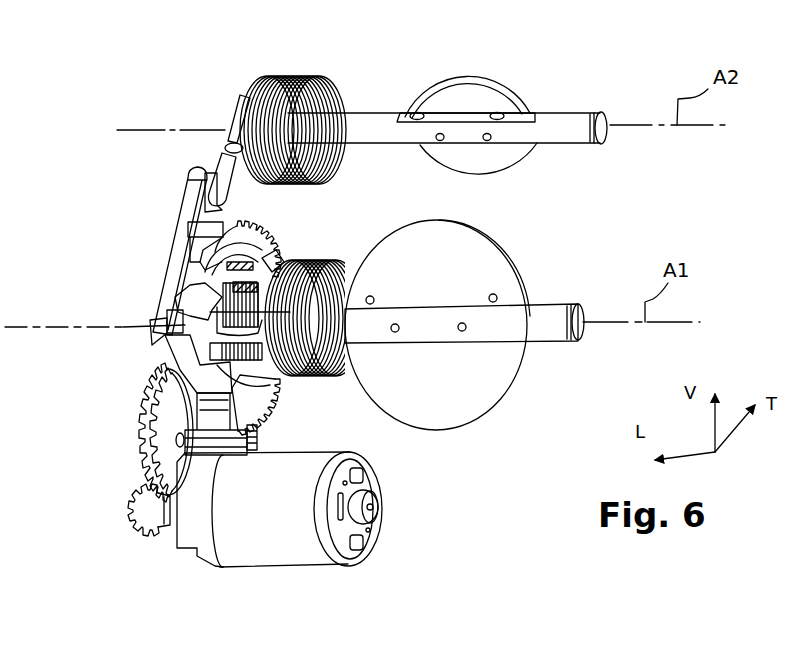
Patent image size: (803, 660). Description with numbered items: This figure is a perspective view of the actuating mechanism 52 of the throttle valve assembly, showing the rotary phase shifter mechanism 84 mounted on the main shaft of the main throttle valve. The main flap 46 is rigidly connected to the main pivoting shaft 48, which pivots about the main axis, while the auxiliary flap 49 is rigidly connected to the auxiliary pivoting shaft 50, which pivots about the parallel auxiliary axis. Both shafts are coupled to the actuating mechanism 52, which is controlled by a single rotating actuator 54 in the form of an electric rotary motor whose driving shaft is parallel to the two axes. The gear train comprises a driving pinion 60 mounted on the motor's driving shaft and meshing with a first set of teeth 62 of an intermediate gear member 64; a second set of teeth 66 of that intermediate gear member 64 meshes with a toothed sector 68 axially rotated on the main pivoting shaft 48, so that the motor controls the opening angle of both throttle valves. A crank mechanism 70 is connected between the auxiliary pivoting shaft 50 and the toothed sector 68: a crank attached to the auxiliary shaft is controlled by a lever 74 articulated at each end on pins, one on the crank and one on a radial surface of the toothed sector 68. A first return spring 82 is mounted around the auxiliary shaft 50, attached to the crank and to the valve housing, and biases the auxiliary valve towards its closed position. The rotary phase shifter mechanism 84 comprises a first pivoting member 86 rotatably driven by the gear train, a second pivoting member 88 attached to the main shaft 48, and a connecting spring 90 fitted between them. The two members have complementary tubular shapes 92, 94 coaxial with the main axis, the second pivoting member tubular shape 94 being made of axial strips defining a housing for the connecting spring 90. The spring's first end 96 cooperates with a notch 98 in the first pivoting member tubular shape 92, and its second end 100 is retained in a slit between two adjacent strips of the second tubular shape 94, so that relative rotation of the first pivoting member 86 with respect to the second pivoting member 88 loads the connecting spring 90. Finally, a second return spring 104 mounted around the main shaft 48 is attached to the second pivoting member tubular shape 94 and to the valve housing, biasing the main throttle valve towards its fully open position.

The main flap 46 is at (468, 258).
The main pivoting shaft 48 is at (545, 311).
The auxiliary flap 49 is at (458, 102).
The auxiliary pivoting shaft 50 is at (560, 132).
The actuating mechanism 52 is at (98, 151).
The rotating actuator 54 is at (243, 580).
The driving pinion 60 is at (141, 501).
The first set of teeth 62 is at (142, 465).
The intermediate gear member 64 is at (128, 436).
The second set of teeth 66 is at (262, 443).
The toothed sector 68 is at (283, 403).
The crank mechanism 70 is at (218, 100).
The lever 74 is at (176, 199).
The first return spring 82 is at (279, 61).
The rotary phase shifter mechanism 84 is at (130, 282).
The first pivoting member 86 is at (175, 281).
The second pivoting member 88 is at (258, 218).
The connecting spring 90 is at (222, 313).
The first pivoting member tubular shape 92 is at (180, 272).
The second pivoting member tubular shape 94 is at (178, 388).
The first end 96 is at (178, 323).
The notch 98 is at (200, 360).
The second end 100 is at (262, 258).
The second return spring 104 is at (340, 252).